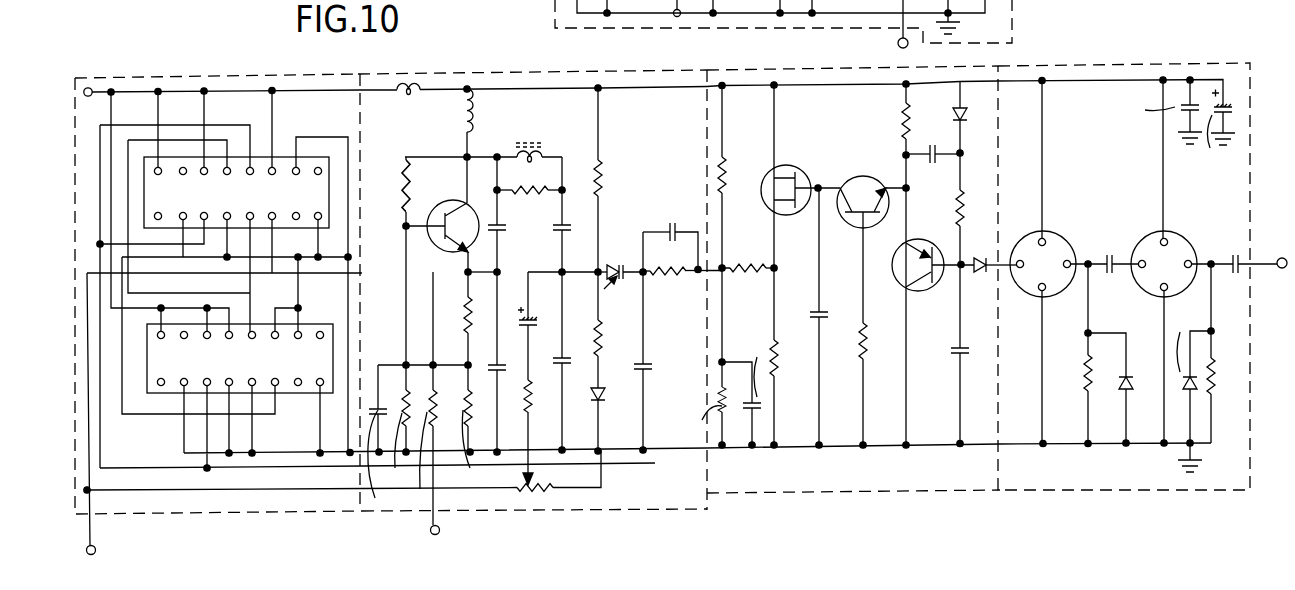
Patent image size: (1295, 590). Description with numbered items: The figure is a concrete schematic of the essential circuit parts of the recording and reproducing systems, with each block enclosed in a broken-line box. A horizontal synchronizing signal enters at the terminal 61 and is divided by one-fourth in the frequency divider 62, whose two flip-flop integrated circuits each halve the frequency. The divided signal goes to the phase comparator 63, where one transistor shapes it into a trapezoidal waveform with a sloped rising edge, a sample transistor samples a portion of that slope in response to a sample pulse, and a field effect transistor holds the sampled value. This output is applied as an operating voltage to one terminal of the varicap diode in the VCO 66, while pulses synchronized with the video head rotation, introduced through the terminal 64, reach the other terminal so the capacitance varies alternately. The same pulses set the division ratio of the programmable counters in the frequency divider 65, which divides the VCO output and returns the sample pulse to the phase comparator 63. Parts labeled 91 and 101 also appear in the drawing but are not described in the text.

The terminal 61 is at (1279, 258).
The frequency divider 62 is at (1040, 63).
The phase comparator 63 is at (722, 68).
The terminal 64 is at (97, 549).
The frequency divider 65 is at (122, 77).
The VCO 66 is at (397, 72).
The terminal 91 is at (898, 44).
The terminal 101 is at (440, 531).